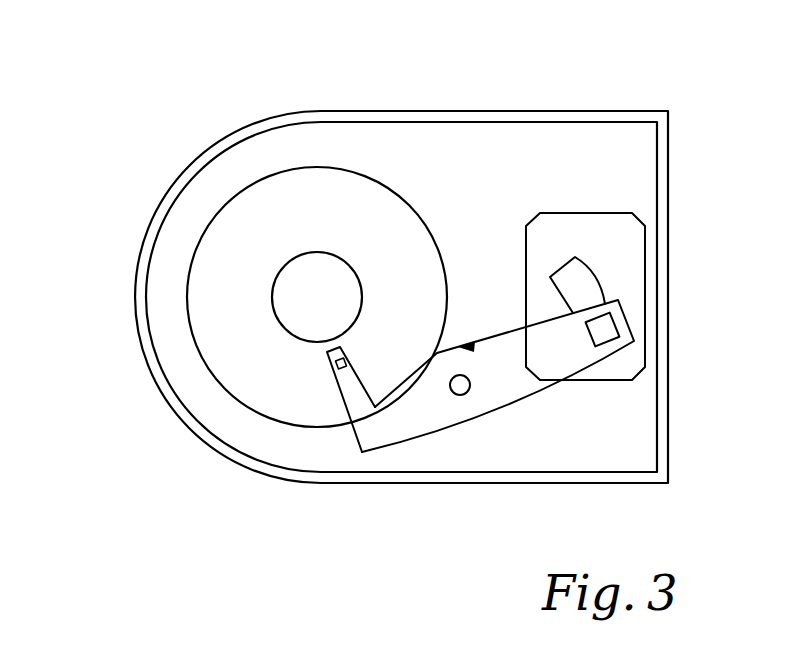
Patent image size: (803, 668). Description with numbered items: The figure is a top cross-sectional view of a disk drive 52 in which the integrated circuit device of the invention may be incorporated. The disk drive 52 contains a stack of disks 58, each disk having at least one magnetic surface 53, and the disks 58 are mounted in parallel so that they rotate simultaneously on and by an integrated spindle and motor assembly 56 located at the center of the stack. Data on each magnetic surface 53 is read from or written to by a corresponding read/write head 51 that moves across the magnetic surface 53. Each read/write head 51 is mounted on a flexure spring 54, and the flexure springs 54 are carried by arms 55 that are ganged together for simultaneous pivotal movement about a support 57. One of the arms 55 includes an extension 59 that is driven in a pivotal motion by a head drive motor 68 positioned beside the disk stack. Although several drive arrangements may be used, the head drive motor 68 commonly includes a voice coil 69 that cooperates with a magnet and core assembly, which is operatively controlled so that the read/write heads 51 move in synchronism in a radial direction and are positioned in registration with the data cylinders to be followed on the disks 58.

The read/write head 51 is at (351, 366).
The disk drive 52 is at (548, 90).
The magnetic surface 53 is at (422, 225).
The flexure spring 54 is at (353, 407).
The arm 55 is at (388, 425).
The integrated spindle and motor assembly 56 is at (320, 292).
The support 57 is at (468, 378).
The disk 58 is at (162, 297).
The extension 59 is at (573, 343).
The head drive motor 68 is at (613, 240).
The voice coil 69 is at (603, 330).